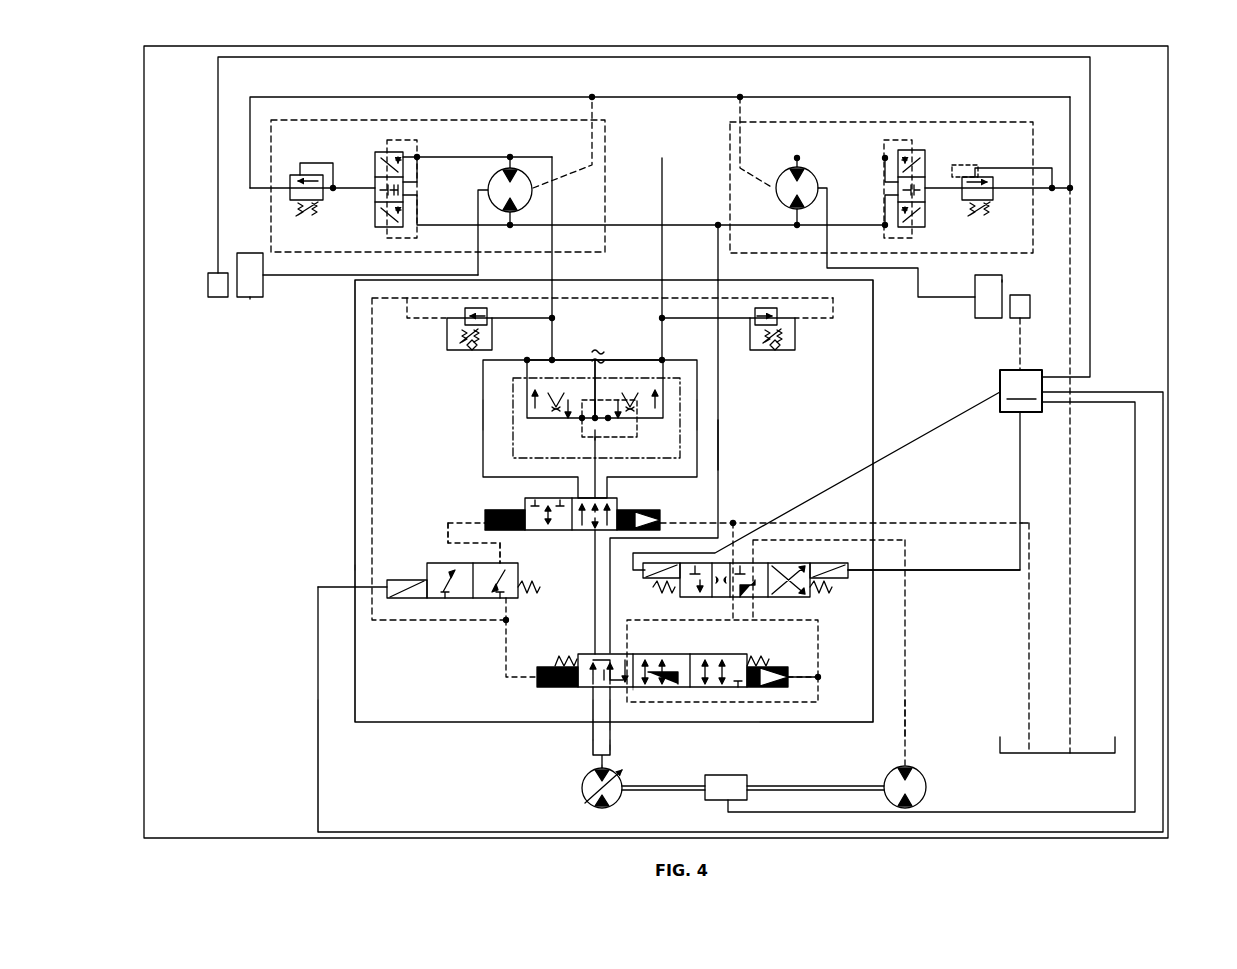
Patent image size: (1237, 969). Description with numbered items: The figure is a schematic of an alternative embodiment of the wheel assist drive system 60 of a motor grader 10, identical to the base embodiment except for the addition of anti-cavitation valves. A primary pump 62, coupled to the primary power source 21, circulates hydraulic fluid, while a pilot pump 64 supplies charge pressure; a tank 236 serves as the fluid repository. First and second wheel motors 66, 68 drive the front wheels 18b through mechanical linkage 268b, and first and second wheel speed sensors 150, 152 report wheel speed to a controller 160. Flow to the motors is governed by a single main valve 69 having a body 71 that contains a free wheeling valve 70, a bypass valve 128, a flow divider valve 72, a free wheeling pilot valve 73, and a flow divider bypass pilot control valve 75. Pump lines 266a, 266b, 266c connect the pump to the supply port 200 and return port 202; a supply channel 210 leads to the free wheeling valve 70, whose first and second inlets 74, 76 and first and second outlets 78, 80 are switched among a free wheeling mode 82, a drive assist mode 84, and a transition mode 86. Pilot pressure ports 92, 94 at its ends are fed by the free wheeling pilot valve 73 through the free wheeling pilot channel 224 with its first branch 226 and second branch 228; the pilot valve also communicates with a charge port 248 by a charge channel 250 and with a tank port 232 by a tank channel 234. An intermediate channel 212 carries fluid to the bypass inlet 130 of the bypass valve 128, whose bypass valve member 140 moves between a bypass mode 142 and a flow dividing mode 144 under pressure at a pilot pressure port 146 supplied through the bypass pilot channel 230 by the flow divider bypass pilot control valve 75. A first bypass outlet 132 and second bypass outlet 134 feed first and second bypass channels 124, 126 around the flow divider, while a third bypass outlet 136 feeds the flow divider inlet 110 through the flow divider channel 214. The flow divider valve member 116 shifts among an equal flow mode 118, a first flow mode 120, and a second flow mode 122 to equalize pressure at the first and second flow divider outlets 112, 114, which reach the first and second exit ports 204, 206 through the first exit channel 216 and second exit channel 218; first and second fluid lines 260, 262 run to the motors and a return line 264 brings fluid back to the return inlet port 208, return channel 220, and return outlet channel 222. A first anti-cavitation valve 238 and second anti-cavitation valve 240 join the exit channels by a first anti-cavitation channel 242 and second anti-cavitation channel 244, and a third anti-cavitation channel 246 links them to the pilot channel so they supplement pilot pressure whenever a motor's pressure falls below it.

The motor grader 10 is at (1172, 52).
The wheel assist drive system 60 is at (213, 122).
The first wheel motor 66 is at (380, 115).
The second wheel motor 68 is at (960, 140).
The first wheel speed sensor 150 is at (208, 285).
The second wheel speed sensor 152 is at (1030, 318).
The mechanical linkage 268b is at (333, 275).
The front wheels 18b is at (250, 297).
The controller 160 is at (740, 601).
The first fluid line 260 is at (550, 262).
The first exit port 204 is at (554, 275).
The second fluid line 262 is at (660, 260).
The second exit port 206 is at (664, 275).
The return line 264 is at (718, 250).
The return inlet port 208 is at (722, 275).
The return channel 220 is at (720, 440).
The body 71 is at (350, 500).
The third anti-cavitation channel 246 is at (372, 450).
The second exit channel 218 is at (665, 292).
The first exit channel 216 is at (550, 318).
The first anti-cavitation channel 242 is at (512, 318).
The second anti-cavitation channel 244 is at (712, 320).
The first anti-cavitation valve 238 is at (445, 333).
The second anti-cavitation valve 240 is at (797, 333).
The flow divider valve 72 is at (490, 400).
The flow divider inlet 110 is at (598, 452).
The first flow divider outlet 112 is at (529, 378).
The second flow divider outlet 114 is at (664, 378).
The equal flow mode 118 is at (600, 398).
The first flow mode 120 is at (552, 405).
The second flow mode 122 is at (665, 393).
The flow divider valve member 116 is at (683, 405).
The first bypass channel 124 is at (483, 420).
The second bypass channel 126 is at (699, 420).
The flow divider channel 214 is at (593, 470).
The bypass inlet 130 is at (593, 532).
The first bypass outlet 132 is at (572, 497).
The second bypass outlet 134 is at (612, 515).
The third bypass outlet 136 is at (605, 498).
The bypass mode 142 is at (618, 522).
The flow dividing mode 144 is at (525, 510).
The bypass valve 128 is at (470, 495).
The pilot pressure port 146 is at (483, 525).
The bypass pilot channel 230 is at (447, 540).
The bypass valve member 140 is at (545, 536).
The flow divider bypass pilot control valve 75 is at (375, 597).
The main valve 69 is at (335, 568).
The intermediate channel 212 is at (592, 592).
The free wheeling pilot channel 224 is at (500, 612).
The first branch 226 is at (505, 668).
The second branch 228 is at (790, 620).
The first free wheeling valve outlet 78 is at (592, 648).
The free wheeling mode 82 is at (580, 654).
The second free wheeling valve outlet 80 is at (612, 648).
The second free wheeling valve inlet 76 is at (655, 692).
The transition mode 86 is at (678, 692).
The drive assist mode 84 is at (747, 658).
The free wheeling pilot valve 73 is at (782, 561).
The tank port 232 is at (878, 528).
The tank channel 234 is at (945, 523).
The charge port 248 is at (885, 540).
The charge channel 250 is at (907, 628).
The primary pump 62 is at (587, 800).
The primary power source 21 is at (705, 795).
The pilot pump 64 is at (927, 787).
The tank 236 is at (1075, 740).
The pilot pressure port 94 is at (905, 740).
The pilot pressure port 92 is at (355, 705).
The free wheeling valve 70 is at (755, 722).
The first free wheeling valve inlet 74 is at (595, 712).
The supply channel 210 is at (595, 728).
The supply port 200 is at (598, 745).
The return port 202 is at (612, 722).
The return outlet channel 222 is at (640, 692).
The pump line 266a is at (610, 750).
The pump line 266b is at (628, 766).
The pump line 266c is at (595, 772).